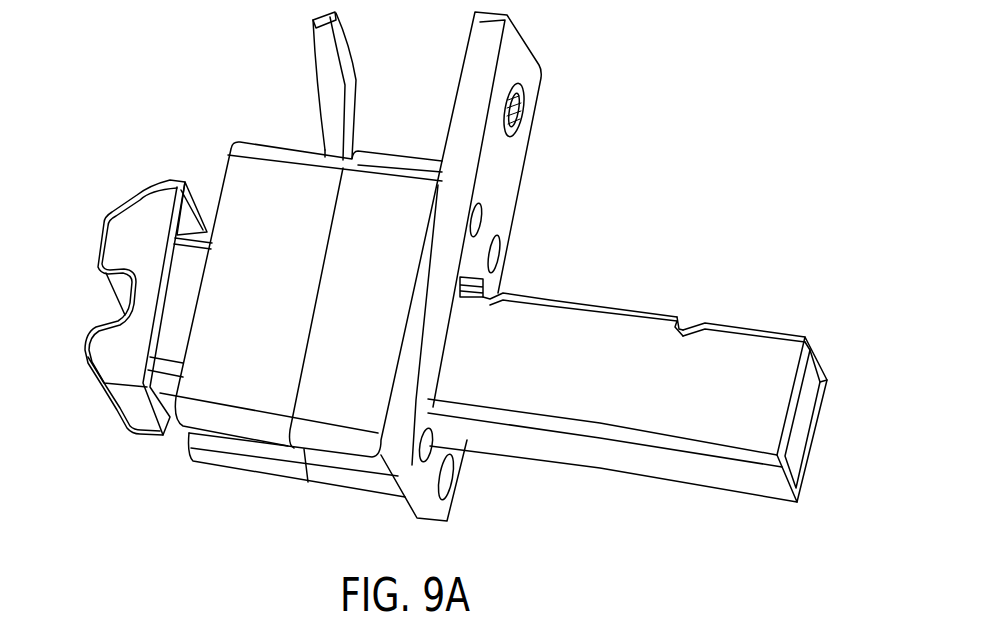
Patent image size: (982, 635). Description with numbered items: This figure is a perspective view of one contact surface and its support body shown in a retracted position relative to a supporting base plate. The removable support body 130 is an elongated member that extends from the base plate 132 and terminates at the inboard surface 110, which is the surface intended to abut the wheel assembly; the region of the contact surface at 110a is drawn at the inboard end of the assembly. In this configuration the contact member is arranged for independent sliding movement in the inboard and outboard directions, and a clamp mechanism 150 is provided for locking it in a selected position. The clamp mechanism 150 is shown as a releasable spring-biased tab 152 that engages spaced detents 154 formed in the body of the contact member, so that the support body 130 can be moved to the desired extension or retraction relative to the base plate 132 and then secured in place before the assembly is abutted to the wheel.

The inboard surface 110 is at (181, 126).
The latch clip 110a is at (108, 310).
The support body 130 is at (565, 450).
The base plate 132 is at (513, 188).
The clamp mechanism 150 is at (243, 465).
The spring-biased tab 152 is at (326, 77).
The detents 154 is at (694, 313).